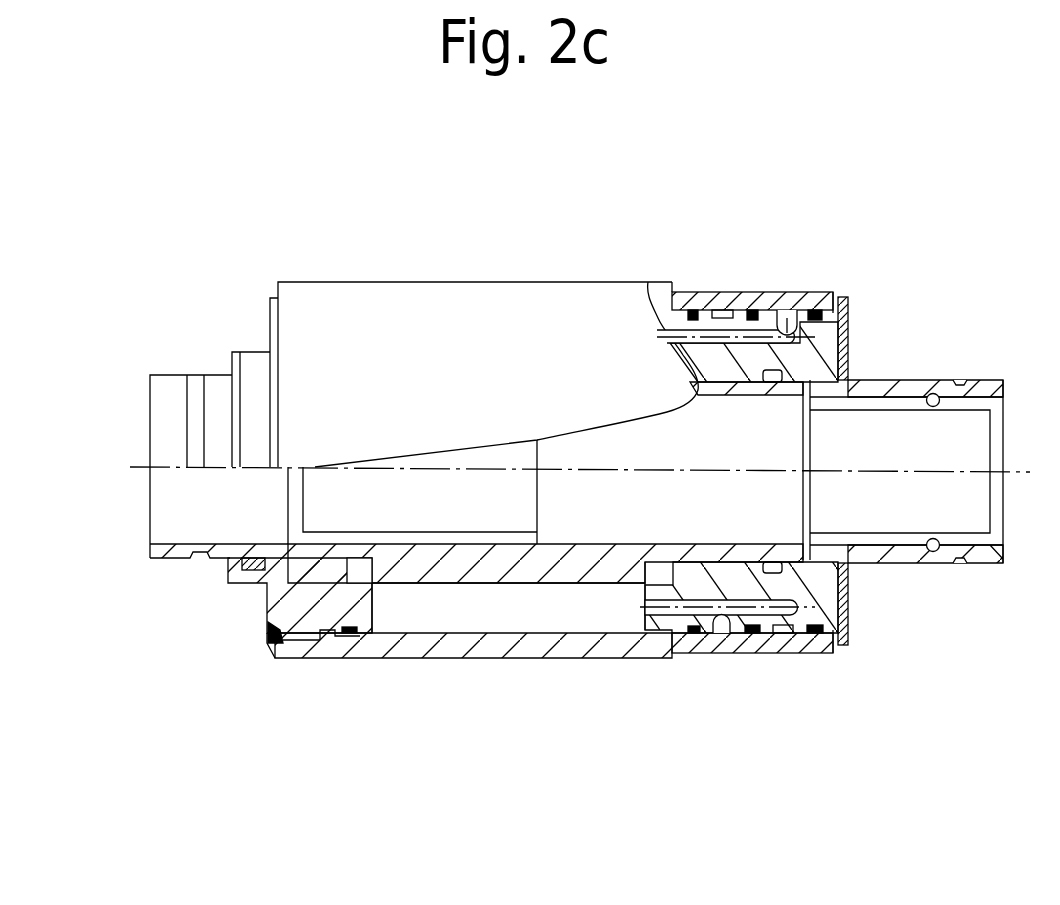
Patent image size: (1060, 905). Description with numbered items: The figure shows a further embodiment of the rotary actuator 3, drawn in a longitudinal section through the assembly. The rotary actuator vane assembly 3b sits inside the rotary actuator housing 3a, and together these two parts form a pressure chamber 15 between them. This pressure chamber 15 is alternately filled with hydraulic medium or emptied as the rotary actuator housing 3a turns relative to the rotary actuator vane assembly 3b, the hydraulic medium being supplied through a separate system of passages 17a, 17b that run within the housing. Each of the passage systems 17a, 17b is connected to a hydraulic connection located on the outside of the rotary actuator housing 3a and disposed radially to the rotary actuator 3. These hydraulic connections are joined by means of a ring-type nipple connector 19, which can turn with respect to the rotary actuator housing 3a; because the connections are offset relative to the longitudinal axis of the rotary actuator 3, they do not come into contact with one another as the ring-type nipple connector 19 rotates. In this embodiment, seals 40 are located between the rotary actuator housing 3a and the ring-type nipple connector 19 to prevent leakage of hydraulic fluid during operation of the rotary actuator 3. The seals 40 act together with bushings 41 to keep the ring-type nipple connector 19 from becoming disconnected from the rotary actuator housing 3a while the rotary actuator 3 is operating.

The rotary actuator 3 is at (490, 727).
The rotary actuator housing 3a is at (600, 647).
The rotary actuator vane assembly 3b is at (173, 518).
The pressure chamber 15 is at (405, 613).
The passage system 17a is at (721, 600).
The passage system 17b is at (790, 312).
The ring-type nipple connector 19 is at (800, 655).
The seals 40 is at (752, 310).
The bushings 41 is at (777, 653).